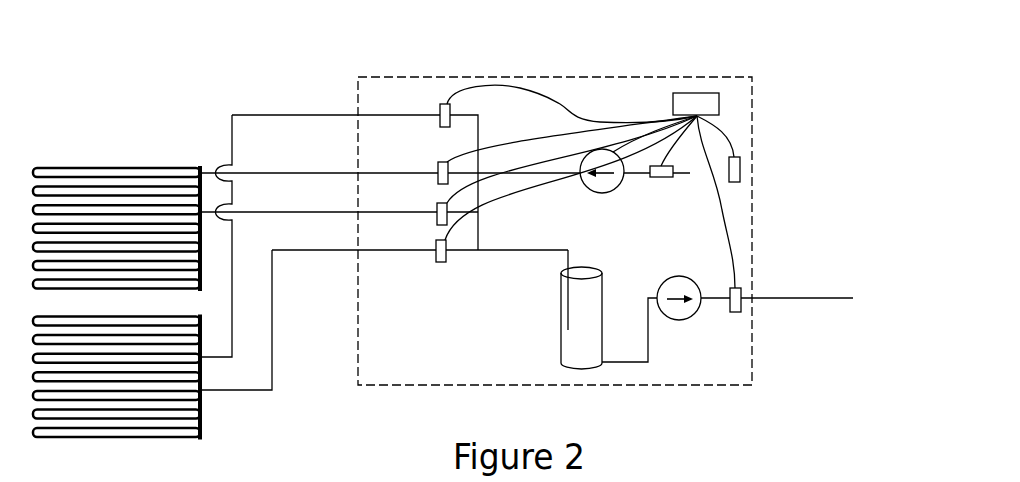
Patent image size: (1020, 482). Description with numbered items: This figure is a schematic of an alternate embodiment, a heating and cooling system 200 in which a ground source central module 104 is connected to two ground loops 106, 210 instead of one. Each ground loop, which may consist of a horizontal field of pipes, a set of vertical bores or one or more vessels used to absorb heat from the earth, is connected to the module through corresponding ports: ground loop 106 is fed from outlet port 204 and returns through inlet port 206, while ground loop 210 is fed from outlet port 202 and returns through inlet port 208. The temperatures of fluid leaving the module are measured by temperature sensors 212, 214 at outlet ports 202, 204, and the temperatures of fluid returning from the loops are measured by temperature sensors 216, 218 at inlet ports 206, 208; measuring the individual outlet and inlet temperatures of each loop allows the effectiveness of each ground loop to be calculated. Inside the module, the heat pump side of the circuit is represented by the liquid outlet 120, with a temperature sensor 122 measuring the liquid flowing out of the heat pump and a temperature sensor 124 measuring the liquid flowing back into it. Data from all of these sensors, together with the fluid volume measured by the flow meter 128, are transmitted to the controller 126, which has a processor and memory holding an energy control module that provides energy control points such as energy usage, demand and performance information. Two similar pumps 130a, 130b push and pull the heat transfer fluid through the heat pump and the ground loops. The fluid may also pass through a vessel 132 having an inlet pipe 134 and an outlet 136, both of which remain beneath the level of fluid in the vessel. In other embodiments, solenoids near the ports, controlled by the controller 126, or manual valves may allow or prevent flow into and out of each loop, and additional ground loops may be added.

The heating and cooling system 200 is at (181, 102).
The ground source central module 104 is at (753, 110).
The ground loop 106 is at (82, 165).
The ground loop 210 is at (200, 400).
The outlet port 202 is at (355, 113).
The outlet port 204 is at (355, 174).
The inlet port 206 is at (355, 213).
The inlet port 208 is at (355, 251).
The temperature sensor 212 is at (438, 105).
The temperature sensor 214 is at (438, 165).
The temperature sensor 216 is at (437, 205).
The temperature sensor 218 is at (435, 243).
The controller 126 is at (714, 92).
The flow meter 128 is at (653, 165).
The pump 130a is at (663, 283).
The pump 130b is at (592, 150).
The vessel 132 is at (562, 348).
The inlet pipe 134 is at (568, 312).
The outlet 136 is at (650, 335).
The liquid outlet 120 is at (764, 149).
The temperature sensor 122 is at (741, 162).
The temperature sensor 124 is at (741, 308).